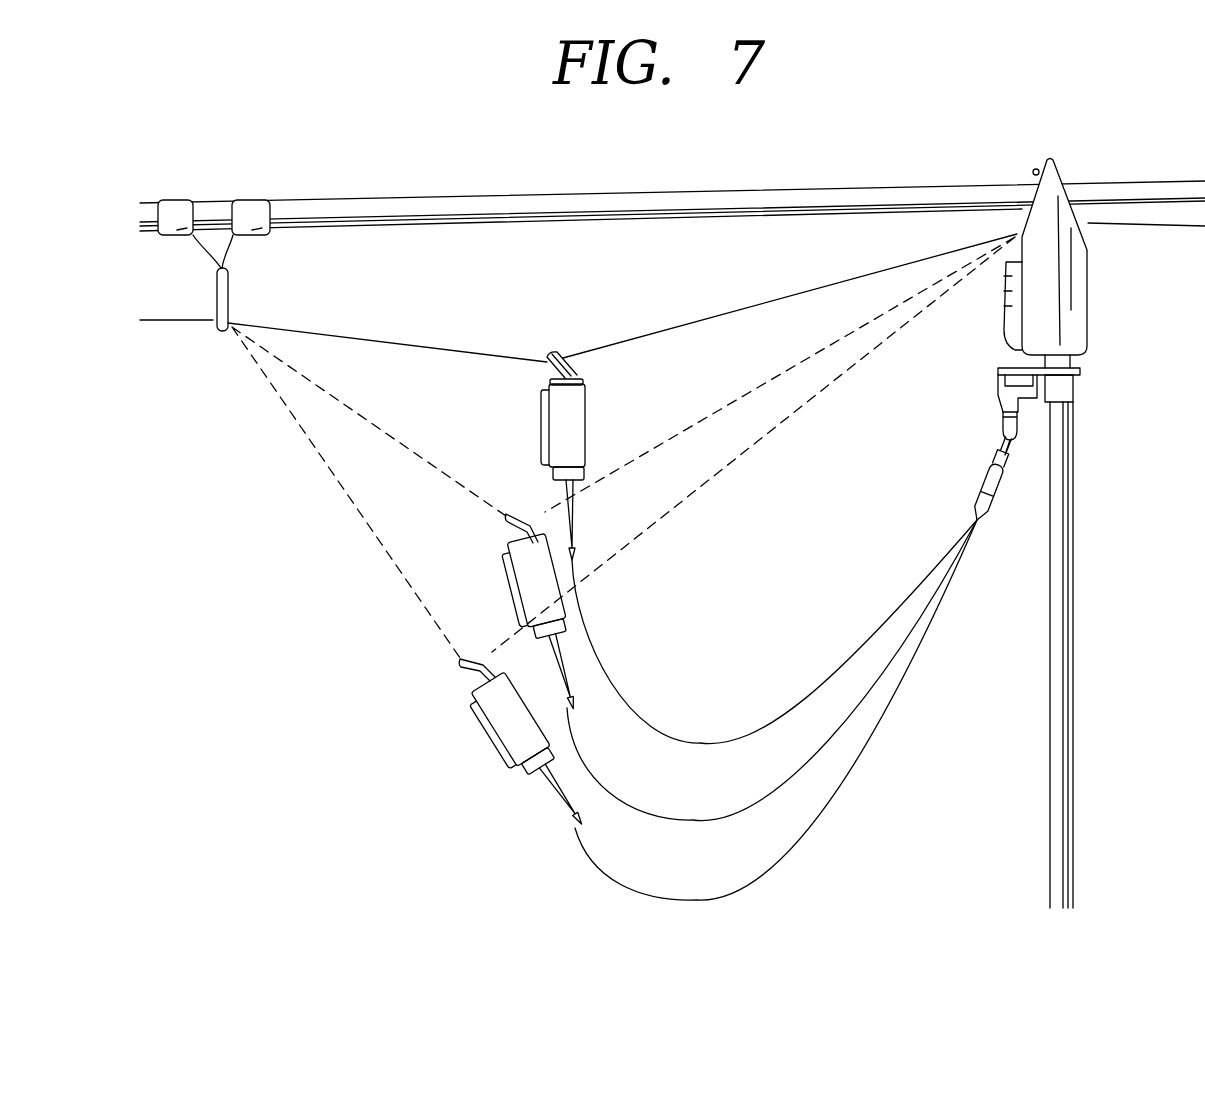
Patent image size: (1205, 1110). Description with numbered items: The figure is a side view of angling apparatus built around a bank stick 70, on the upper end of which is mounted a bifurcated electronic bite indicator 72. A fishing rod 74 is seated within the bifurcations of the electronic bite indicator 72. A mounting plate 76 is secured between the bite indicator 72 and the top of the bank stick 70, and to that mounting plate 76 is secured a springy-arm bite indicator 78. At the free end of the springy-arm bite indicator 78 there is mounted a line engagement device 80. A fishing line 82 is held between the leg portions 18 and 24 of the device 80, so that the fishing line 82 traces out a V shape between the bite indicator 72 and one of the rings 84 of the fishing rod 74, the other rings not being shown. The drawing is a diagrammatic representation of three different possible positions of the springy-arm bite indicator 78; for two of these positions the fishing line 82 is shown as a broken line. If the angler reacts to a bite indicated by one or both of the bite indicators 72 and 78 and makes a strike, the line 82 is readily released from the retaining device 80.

The leg portion 18 is at (546, 356).
The leg portion 24 is at (556, 353).
The bank stick 70 is at (1065, 626).
The bifurcated electronic bite indicator 72 is at (1062, 262).
The fishing rod 74 is at (758, 198).
The mounting plate 76 is at (1082, 372).
The springy-arm bite indicator 78 is at (855, 670).
The line engagement device 80 is at (582, 377).
The fishing line 82 is at (785, 297).
The ring 84 is at (228, 302).